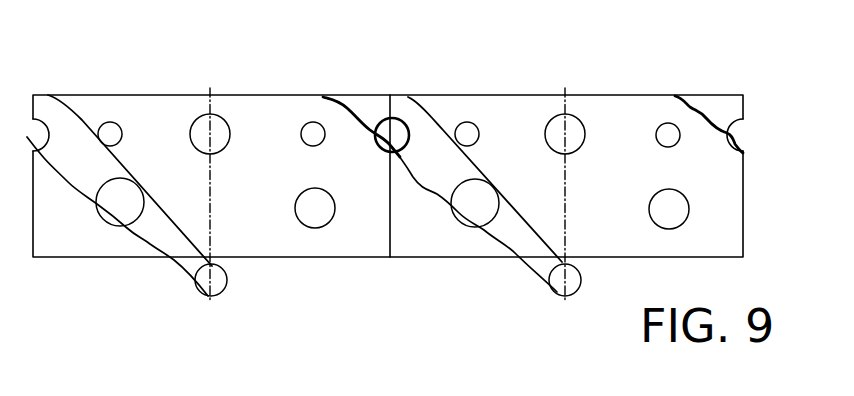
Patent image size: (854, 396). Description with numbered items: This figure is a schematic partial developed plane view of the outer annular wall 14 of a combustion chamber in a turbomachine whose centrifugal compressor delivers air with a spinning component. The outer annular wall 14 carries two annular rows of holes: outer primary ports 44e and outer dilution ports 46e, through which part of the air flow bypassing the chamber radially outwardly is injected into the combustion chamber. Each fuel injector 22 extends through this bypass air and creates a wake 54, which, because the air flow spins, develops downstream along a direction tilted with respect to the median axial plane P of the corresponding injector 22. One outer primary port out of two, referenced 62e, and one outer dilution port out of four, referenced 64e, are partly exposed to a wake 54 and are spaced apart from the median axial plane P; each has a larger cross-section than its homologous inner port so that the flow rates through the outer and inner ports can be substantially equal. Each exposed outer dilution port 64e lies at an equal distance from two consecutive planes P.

The outer annular wall 14 is at (722, 91).
The fuel injector 22 is at (227, 282).
The outer primary port 44e is at (700, 220).
The outer dilution port 46e is at (736, 134).
The wake 54 is at (82, 120).
The outer primary port partly exposed to a wake 62e is at (111, 226).
The outer dilution port partly exposed to a wake 64e is at (49, 97).
The median axial plane P is at (210, 298).